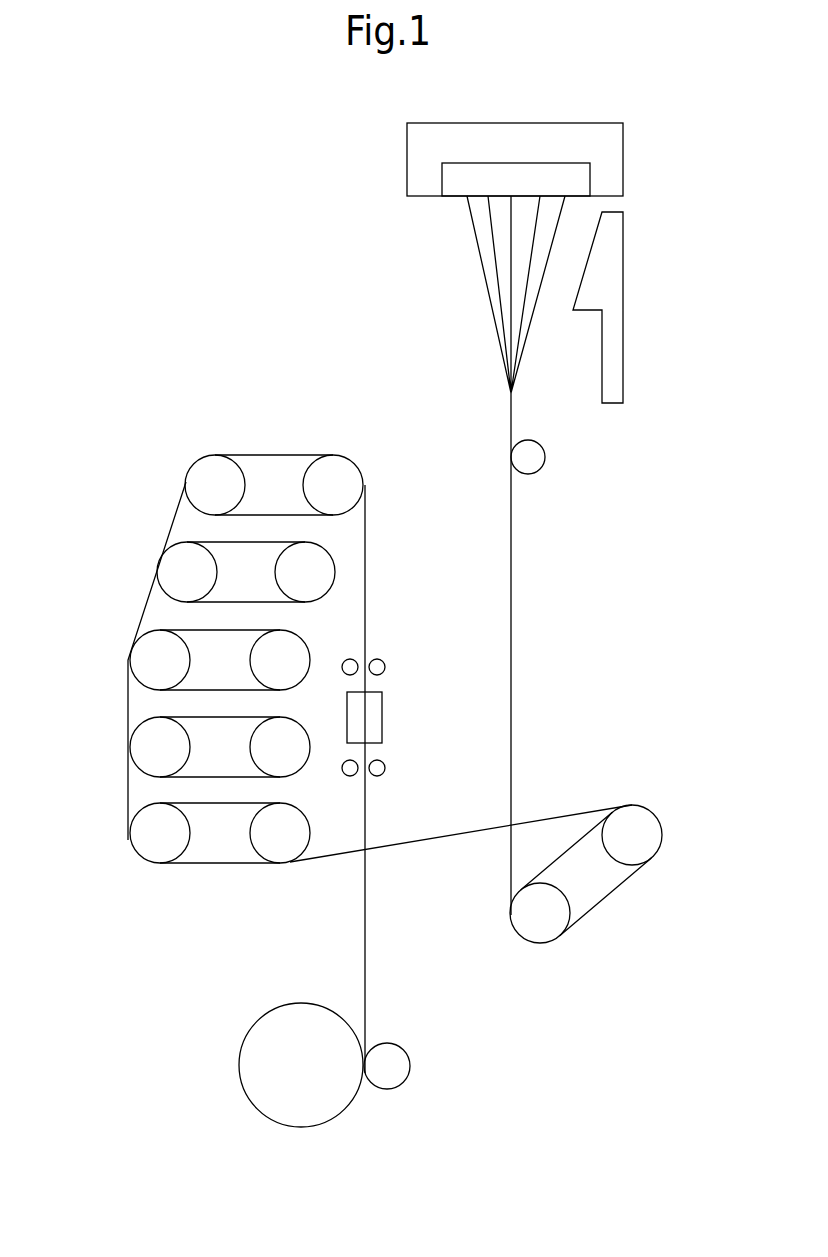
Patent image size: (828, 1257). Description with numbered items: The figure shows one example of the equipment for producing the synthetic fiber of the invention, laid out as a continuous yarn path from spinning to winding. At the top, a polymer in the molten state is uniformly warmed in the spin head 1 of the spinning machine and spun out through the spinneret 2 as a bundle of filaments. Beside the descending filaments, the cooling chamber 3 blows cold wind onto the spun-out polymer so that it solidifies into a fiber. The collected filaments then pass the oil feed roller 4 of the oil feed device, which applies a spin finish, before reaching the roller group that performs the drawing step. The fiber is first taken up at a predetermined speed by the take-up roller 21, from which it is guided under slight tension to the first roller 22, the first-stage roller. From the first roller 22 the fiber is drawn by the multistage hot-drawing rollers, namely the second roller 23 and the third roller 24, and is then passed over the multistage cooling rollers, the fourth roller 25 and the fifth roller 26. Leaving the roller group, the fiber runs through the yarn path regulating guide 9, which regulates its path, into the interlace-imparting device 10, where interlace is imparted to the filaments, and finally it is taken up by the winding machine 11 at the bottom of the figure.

The spin head 1 is at (610, 153).
The spinneret 2 is at (455, 183).
The cooling chamber 3 is at (610, 272).
The oil feed roller 4 is at (532, 455).
The yarn path regulating guide 9 is at (377, 657).
The interlace-imparting device 10 is at (372, 710).
The winding machine 11 is at (393, 1067).
The take-up roller 21 is at (638, 835).
The first roller 22 is at (153, 833).
The second roller 23 is at (267, 747).
The third roller 24 is at (270, 660).
The fourth roller 25 is at (297, 573).
The fifth roller 26 is at (327, 473).